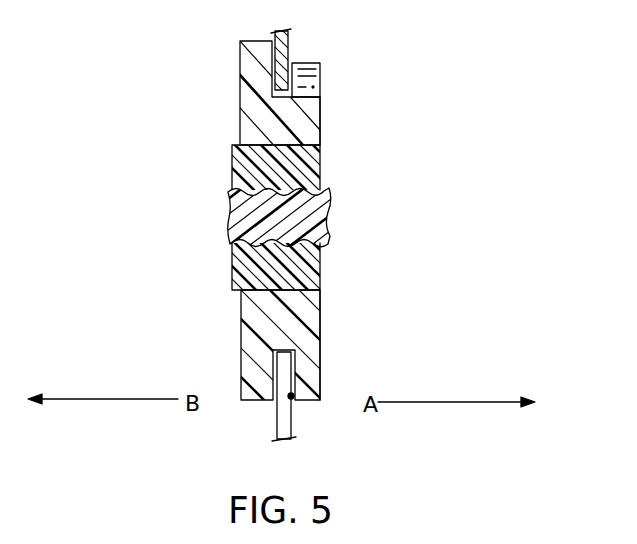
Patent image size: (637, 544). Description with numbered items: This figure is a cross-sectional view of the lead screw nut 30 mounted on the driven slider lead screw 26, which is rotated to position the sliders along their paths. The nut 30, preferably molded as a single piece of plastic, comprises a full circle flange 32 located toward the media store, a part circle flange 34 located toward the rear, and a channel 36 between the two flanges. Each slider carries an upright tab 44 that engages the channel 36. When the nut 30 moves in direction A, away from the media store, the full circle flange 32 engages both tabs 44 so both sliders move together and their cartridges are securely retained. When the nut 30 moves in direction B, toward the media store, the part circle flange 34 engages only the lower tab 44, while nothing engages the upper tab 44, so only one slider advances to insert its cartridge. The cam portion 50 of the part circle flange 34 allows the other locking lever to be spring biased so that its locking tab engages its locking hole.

The slider lead screw 26 is at (320, 210).
The lead screw nut 30 is at (316, 164).
The full circle flange 32 is at (240, 93).
The part circle flange 34 is at (320, 126).
The channel 36 is at (291, 398).
The upright tab 44 is at (288, 50).
The cam portion 50 is at (320, 99).